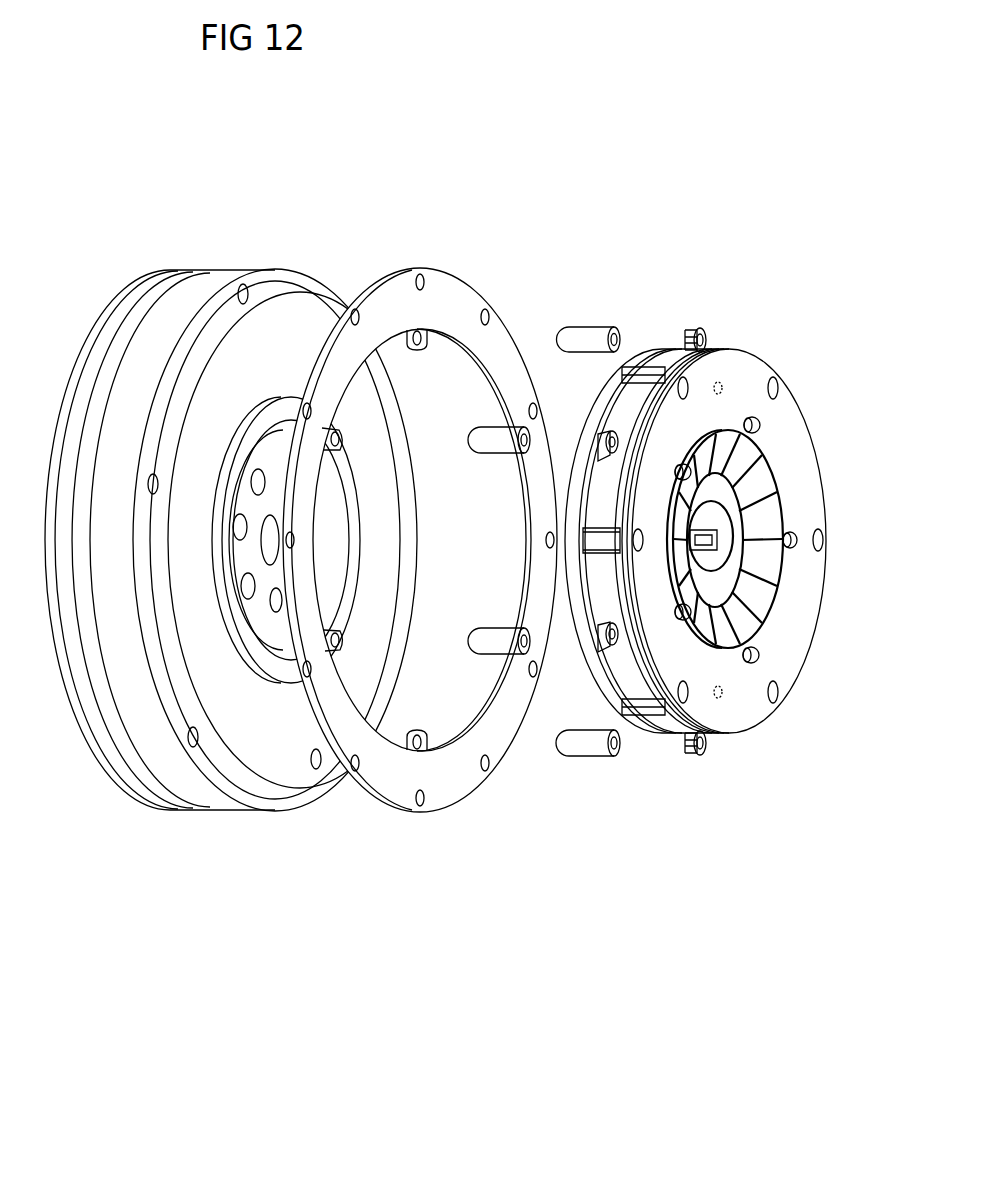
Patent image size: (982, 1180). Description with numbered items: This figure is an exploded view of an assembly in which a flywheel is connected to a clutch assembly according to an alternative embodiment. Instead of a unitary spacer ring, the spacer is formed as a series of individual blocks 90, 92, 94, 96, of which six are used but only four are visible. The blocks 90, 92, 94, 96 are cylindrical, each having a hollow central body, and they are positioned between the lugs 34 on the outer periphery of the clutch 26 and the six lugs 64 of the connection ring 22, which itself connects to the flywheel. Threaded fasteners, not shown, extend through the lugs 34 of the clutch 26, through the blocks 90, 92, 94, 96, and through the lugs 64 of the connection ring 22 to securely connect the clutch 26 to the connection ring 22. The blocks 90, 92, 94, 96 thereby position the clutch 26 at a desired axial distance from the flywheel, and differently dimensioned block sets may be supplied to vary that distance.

The connection ring 22 is at (340, 718).
The clutch 26 is at (740, 393).
The lugs 34 is at (603, 428).
The lugs 64 is at (218, 387).
The block 90 is at (602, 325).
The block 92 is at (487, 442).
The block 94 is at (485, 655).
The block 96 is at (577, 757).